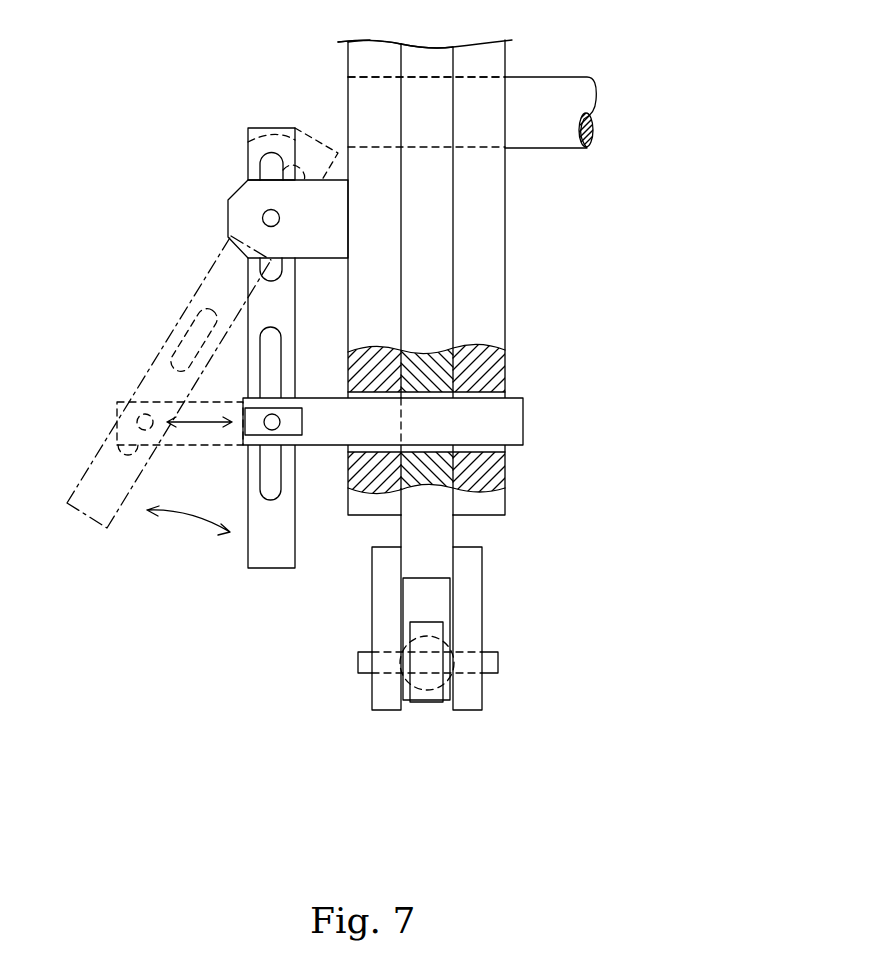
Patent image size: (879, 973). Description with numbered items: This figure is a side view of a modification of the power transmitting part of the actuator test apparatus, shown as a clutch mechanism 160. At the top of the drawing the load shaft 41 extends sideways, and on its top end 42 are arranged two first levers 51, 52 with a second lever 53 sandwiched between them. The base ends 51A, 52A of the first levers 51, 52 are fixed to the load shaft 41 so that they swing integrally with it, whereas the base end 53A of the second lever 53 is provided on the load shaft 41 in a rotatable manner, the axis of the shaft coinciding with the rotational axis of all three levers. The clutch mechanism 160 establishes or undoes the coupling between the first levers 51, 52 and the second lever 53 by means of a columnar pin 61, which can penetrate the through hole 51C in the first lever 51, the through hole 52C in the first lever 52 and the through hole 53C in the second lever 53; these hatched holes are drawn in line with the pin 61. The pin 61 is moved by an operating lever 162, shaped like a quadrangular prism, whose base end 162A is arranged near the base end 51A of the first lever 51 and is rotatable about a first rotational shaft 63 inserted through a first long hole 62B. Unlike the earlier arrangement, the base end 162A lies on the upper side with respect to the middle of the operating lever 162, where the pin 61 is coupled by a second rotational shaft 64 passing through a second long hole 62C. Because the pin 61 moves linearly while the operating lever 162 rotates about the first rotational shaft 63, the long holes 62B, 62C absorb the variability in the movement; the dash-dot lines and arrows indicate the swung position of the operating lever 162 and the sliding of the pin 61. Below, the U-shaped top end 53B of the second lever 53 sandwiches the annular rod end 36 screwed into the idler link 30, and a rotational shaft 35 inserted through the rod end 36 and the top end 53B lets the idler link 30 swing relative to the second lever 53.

The clutch mechanism 160 is at (130, 77).
The operating lever 162 is at (248, 548).
The base end of operating lever 162A is at (248, 165).
The first rotational shaft 63 is at (262, 218).
The first long hole 62B is at (261, 279).
The second long hole 62C is at (168, 368).
The second rotational shaft 64 is at (135, 415).
The pin 61 is at (523, 420).
The first lever 51 is at (348, 328).
The base end of first lever 51A is at (347, 45).
The through hole 51C is at (348, 455).
The top end of load shaft 42 is at (348, 100).
The load shaft 41 is at (563, 77).
The first lever 52 is at (505, 233).
The base end of first lever 52A is at (505, 52).
The through hole 52C is at (488, 400).
The second lever 53 is at (452, 530).
The base end of second lever 53A is at (403, 47).
The top end of second lever 53B is at (482, 596).
The through hole 53C is at (443, 442).
The rotational shaft 35 is at (498, 662).
The idler link 30 is at (398, 665).
The rod end 36 is at (425, 702).